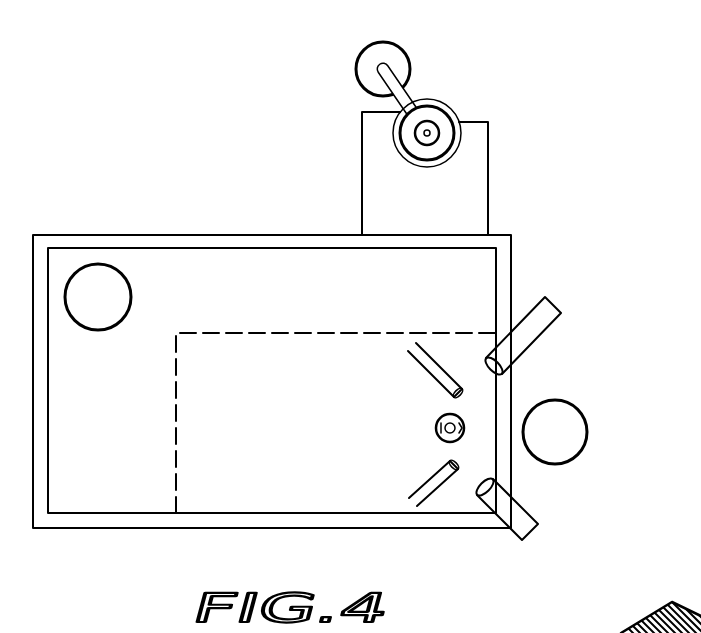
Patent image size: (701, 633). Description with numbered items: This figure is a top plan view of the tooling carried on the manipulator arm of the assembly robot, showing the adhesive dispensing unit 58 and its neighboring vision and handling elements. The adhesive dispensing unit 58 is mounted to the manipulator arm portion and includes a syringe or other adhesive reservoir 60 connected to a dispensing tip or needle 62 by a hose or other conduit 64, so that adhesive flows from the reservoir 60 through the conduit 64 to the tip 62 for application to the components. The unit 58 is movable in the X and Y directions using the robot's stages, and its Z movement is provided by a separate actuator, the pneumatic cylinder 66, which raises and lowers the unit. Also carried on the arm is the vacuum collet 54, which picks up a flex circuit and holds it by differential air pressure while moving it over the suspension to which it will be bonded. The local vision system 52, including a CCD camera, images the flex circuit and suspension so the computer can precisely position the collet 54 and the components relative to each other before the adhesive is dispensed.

The local vision system 52 is at (594, 428).
The vacuum collet 54 is at (437, 435).
The adhesive dispensing unit 58 is at (392, 91).
The adhesive reservoir 60 is at (378, 44).
The dispensing tip 62 is at (431, 131).
The conduit 64 is at (410, 92).
The pneumatic cylinder 66 is at (430, 103).